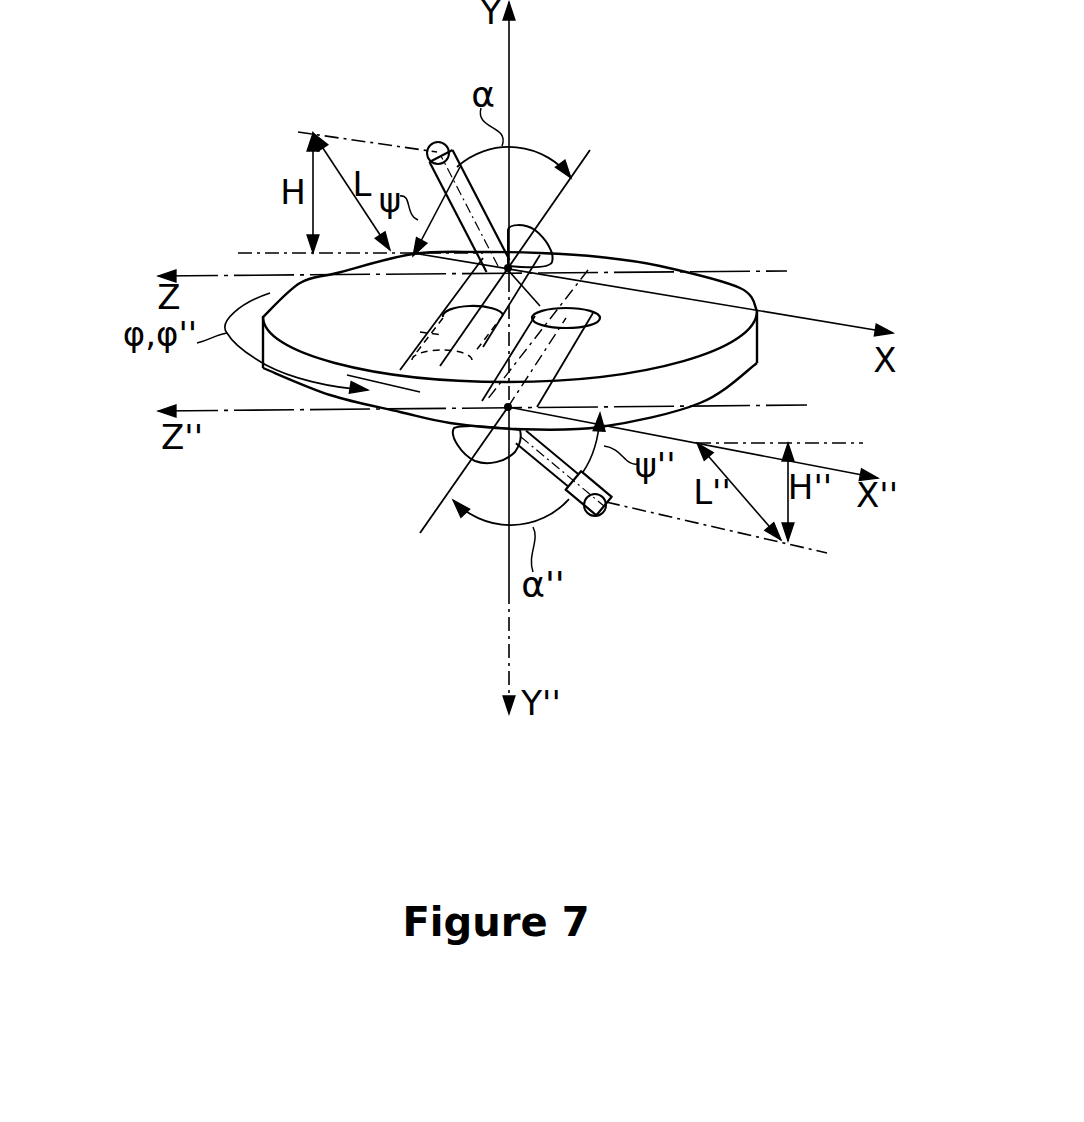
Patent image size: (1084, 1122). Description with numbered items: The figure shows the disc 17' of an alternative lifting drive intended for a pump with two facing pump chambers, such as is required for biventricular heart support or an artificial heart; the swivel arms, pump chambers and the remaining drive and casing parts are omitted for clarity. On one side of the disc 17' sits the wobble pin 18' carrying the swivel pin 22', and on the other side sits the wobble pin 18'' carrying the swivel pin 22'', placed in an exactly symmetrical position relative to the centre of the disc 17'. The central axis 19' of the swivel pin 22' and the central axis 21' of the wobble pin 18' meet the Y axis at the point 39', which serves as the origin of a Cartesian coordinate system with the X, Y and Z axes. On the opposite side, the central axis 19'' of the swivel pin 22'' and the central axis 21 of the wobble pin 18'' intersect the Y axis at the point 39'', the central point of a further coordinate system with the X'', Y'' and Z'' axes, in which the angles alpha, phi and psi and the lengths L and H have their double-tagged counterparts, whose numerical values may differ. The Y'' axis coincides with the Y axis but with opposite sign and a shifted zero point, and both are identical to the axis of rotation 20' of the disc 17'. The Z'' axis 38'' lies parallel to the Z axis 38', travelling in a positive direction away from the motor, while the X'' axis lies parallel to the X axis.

The disc 17' is at (548, 341).
The wobble pin 18' is at (526, 284).
The wobble pin 18'' is at (481, 409).
The central axis of the swivel pin 19' is at (367, 115).
The central axis of the swivel pin 19'' is at (716, 557).
The axis of rotation 20' is at (553, 358).
The central axis of the wobble pin 21' is at (525, 225).
The central axis of the wobble pin 21 is at (457, 509).
The swivel pin 22' is at (457, 160).
The swivel pin 22'' is at (572, 524).
The Z axis 38' is at (481, 235).
The Z'' axis 38'' is at (526, 408).
The intersection point 39' is at (580, 239).
The point 39'' is at (440, 452).